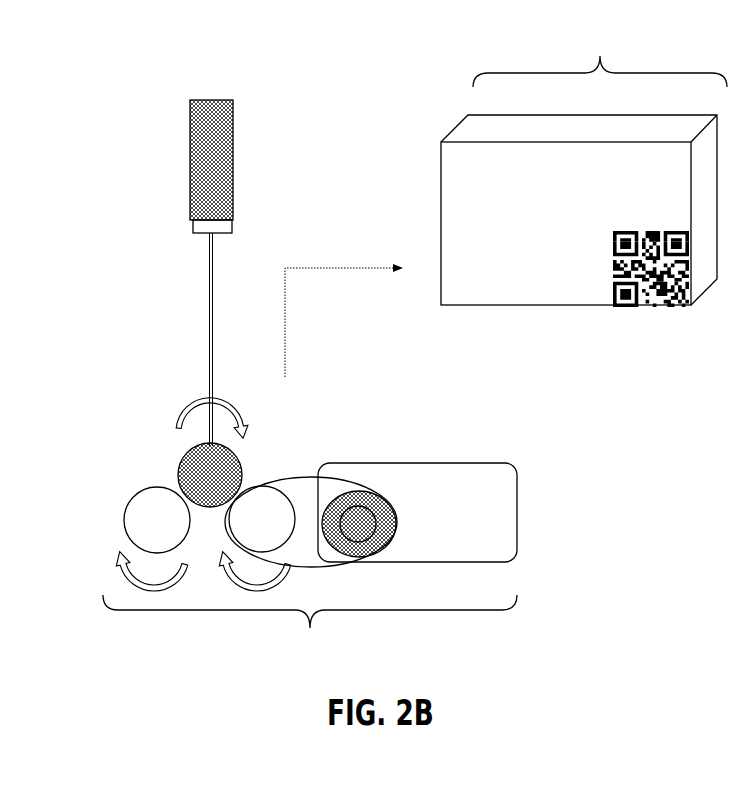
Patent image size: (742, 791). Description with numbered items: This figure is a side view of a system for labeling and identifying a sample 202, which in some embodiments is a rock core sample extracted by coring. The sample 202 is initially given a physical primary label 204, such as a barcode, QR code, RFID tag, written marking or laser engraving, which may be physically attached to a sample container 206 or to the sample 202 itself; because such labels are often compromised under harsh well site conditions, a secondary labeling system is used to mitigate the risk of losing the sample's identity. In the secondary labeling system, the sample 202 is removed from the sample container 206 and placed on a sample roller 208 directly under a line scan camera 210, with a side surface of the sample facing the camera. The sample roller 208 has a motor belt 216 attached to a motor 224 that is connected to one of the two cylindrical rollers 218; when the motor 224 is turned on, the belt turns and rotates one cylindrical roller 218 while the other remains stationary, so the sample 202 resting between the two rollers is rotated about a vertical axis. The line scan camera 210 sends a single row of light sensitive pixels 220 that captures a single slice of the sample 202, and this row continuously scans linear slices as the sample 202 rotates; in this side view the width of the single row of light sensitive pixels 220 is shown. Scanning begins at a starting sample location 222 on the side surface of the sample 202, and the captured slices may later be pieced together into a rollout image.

The sample 202 is at (180, 463).
The physical primary label 204 is at (652, 305).
The sample container 206 is at (584, 163).
The sample roller 208 is at (310, 629).
The line scan camera 210 is at (190, 152).
The motor belt 216 is at (296, 480).
The cylindrical rollers 218 is at (123, 517).
The single row of light sensitive pixels 220 is at (208, 305).
The starting sample location 222 is at (208, 447).
The motor 224 is at (393, 463).